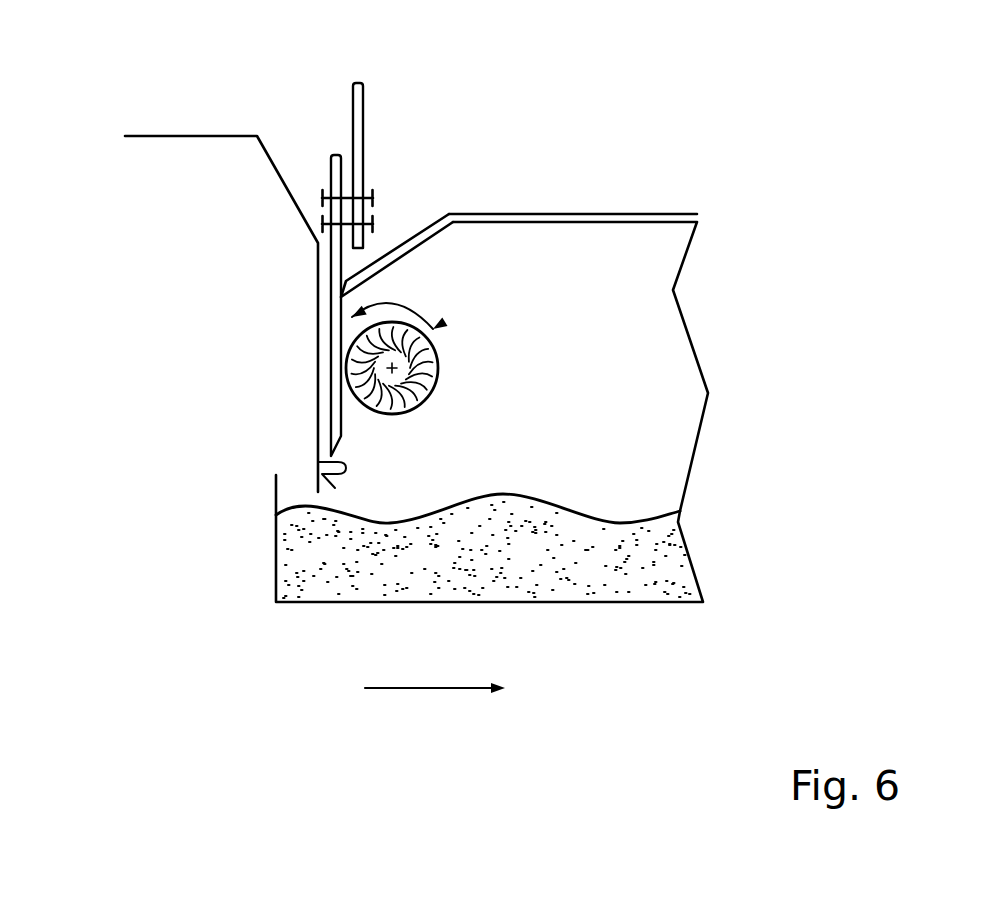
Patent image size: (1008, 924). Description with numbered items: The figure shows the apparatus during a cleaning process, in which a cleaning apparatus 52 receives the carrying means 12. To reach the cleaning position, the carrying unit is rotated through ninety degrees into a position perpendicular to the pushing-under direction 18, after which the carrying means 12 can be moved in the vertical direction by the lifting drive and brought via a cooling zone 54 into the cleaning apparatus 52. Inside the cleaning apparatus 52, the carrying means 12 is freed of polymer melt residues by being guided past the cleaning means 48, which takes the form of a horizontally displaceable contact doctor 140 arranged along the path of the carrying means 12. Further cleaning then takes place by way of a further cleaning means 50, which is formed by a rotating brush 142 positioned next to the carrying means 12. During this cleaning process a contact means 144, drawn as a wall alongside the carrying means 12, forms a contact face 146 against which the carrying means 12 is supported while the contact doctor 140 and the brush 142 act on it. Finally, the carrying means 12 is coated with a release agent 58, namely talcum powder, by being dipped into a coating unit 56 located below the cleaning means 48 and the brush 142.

The carrying means 12 is at (333, 178).
The pushing-under direction 18 is at (422, 688).
The cleaning means 48 is at (434, 203).
The further cleaning means 50 is at (436, 328).
The cleaning apparatus 52 is at (120, 181).
The cooling zone 54 is at (605, 425).
The coating unit 56 is at (214, 553).
The release agent 58 is at (635, 568).
The contact doctor 140 is at (420, 232).
The brush 142 is at (438, 366).
The contact means 144 is at (318, 323).
The contact face 146 is at (318, 462).